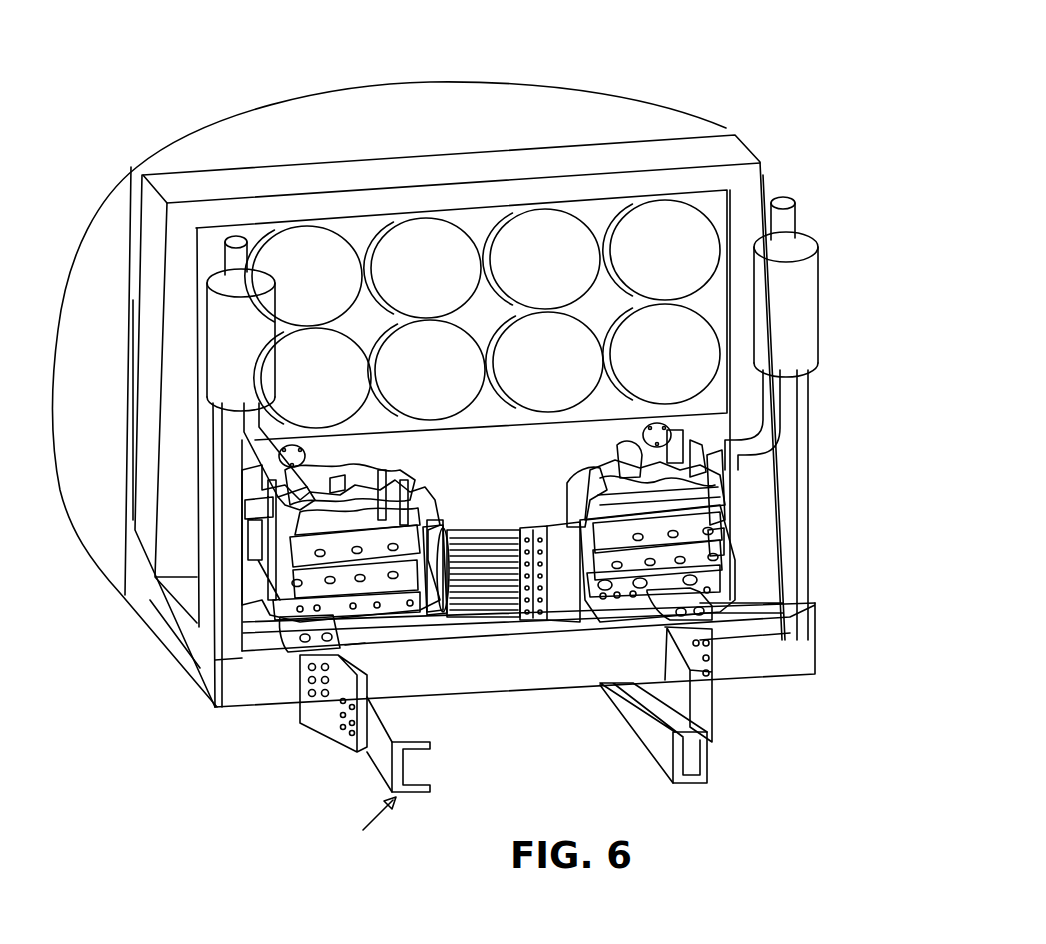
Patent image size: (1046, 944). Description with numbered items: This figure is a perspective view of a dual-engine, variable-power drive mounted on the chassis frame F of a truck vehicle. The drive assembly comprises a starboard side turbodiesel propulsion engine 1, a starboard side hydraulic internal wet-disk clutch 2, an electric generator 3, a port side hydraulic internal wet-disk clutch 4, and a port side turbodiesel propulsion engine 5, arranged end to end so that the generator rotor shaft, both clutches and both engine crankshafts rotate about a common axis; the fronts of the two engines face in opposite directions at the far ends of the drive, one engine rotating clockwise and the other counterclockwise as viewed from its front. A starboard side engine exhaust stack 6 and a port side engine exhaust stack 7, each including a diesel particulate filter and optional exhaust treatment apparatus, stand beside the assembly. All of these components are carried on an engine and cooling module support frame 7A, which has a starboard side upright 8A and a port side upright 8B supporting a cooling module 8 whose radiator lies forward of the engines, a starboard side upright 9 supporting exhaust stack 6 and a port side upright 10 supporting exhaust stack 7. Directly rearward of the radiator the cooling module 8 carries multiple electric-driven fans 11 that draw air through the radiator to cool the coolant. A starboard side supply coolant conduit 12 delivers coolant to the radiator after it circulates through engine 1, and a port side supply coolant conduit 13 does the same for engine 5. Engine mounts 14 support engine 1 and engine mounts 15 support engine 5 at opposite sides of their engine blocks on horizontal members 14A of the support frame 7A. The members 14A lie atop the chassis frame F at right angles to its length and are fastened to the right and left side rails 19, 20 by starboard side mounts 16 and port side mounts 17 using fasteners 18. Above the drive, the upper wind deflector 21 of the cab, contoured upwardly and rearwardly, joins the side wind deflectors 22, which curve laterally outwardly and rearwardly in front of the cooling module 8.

The starboard side turbodiesel propulsion engine 1 is at (587, 457).
The starboard side hydraulic internal wet-disk clutch 2 is at (543, 520).
The electric generator 3 is at (473, 533).
The port side hydraulic internal wet-disk clutch 4 is at (422, 520).
The port side turbodiesel propulsion engine 5 is at (417, 482).
The starboard side engine exhaust stack 6 is at (827, 287).
The port side engine exhaust stack 7 is at (254, 340).
The engine and cooling module support frame 7A is at (190, 657).
The cooling module 8 is at (756, 150).
The starboard side upright 8A is at (750, 215).
The port side upright 8B is at (143, 507).
The starboard side upright 9 is at (812, 543).
The port side upright 10 is at (223, 617).
The electric-driven fans 11 is at (346, 237).
The starboard side supply coolant conduit 12 is at (650, 445).
The port side supply coolant conduit 13 is at (315, 458).
The engine mounts 14 is at (786, 600).
The horizontal members 14A is at (508, 676).
The engine mounts 15 is at (350, 640).
The starboard side mounts 16 is at (723, 670).
The port side mounts 17 is at (367, 693).
The fasteners 18 is at (312, 680).
The right side rail 19 is at (720, 775).
The left side rail 20 is at (385, 768).
The upper wind deflector 21 is at (407, 85).
The side wind deflectors 22 is at (113, 187).
The chassis frame F is at (373, 829).